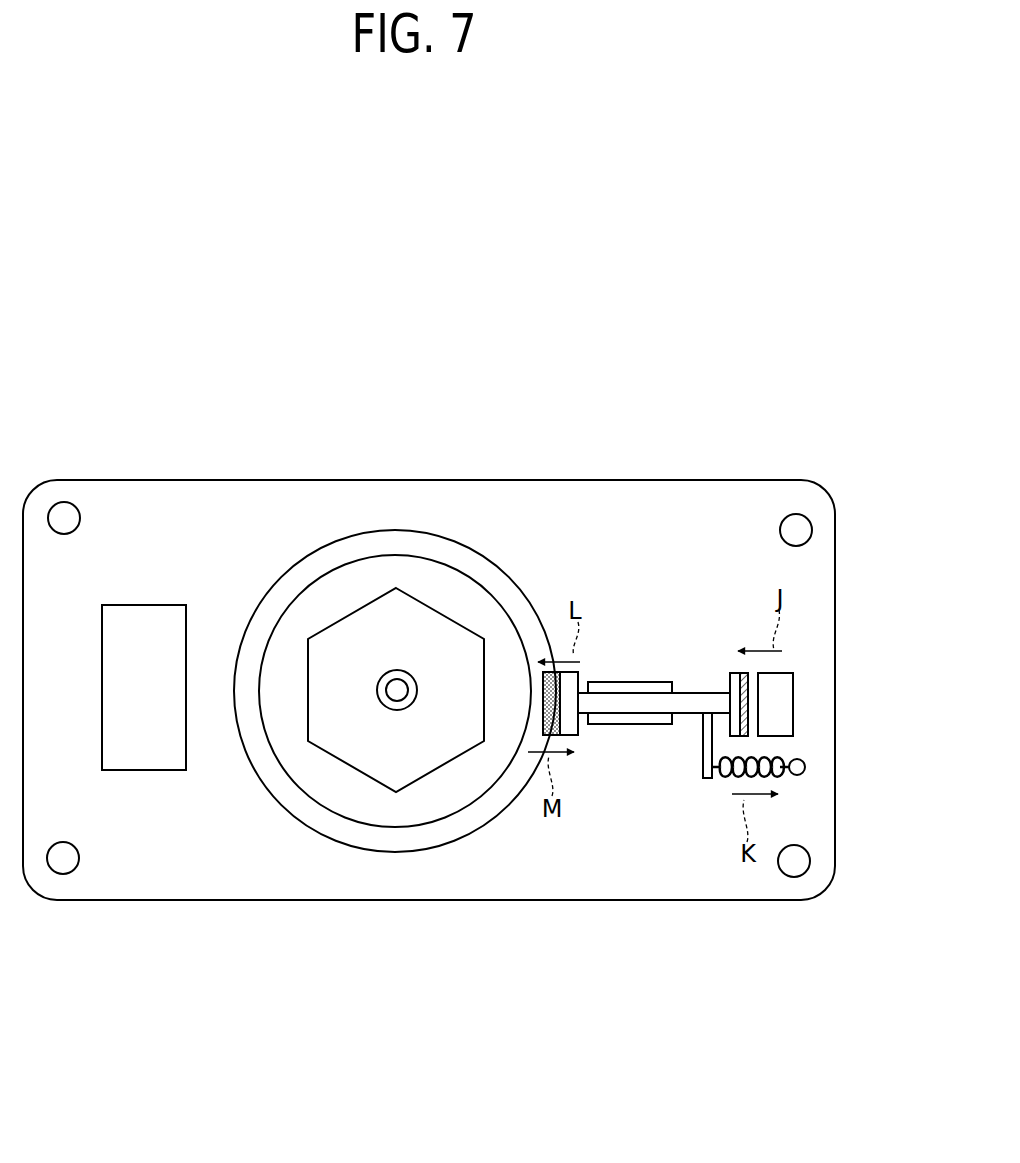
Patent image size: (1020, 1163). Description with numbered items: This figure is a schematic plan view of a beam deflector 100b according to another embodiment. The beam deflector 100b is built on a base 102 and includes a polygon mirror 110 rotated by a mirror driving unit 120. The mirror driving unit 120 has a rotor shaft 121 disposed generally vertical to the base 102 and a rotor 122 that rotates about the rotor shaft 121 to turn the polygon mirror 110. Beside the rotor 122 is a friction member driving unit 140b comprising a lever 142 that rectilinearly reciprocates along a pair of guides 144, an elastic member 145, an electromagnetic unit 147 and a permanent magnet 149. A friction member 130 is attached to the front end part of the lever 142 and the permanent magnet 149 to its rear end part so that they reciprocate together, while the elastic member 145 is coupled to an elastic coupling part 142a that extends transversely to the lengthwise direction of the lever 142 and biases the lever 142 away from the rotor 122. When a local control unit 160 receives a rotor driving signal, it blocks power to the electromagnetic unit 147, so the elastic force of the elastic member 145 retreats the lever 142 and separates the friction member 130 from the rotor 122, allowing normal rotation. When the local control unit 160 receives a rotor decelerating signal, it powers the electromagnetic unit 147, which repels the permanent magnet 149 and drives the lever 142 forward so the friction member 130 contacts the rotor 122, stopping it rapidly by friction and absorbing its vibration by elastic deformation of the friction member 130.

The beam deflector 100b is at (649, 466).
The base 102 is at (217, 860).
The polygon mirror 110 is at (345, 645).
The mirror driving unit 120 is at (326, 855).
The rotor shaft 121 is at (397, 688).
The rotor 122 is at (493, 580).
The friction member 130 is at (545, 706).
The friction member driving unit 140b is at (634, 829).
The lever 142 is at (703, 703).
The elastic coupling part 142a is at (703, 748).
The guides 144 is at (634, 688).
The elastic member 145 is at (805, 767).
The electromagnetic unit 147 is at (787, 715).
The permanent magnet 149 is at (747, 685).
The local control unit 160 is at (138, 755).